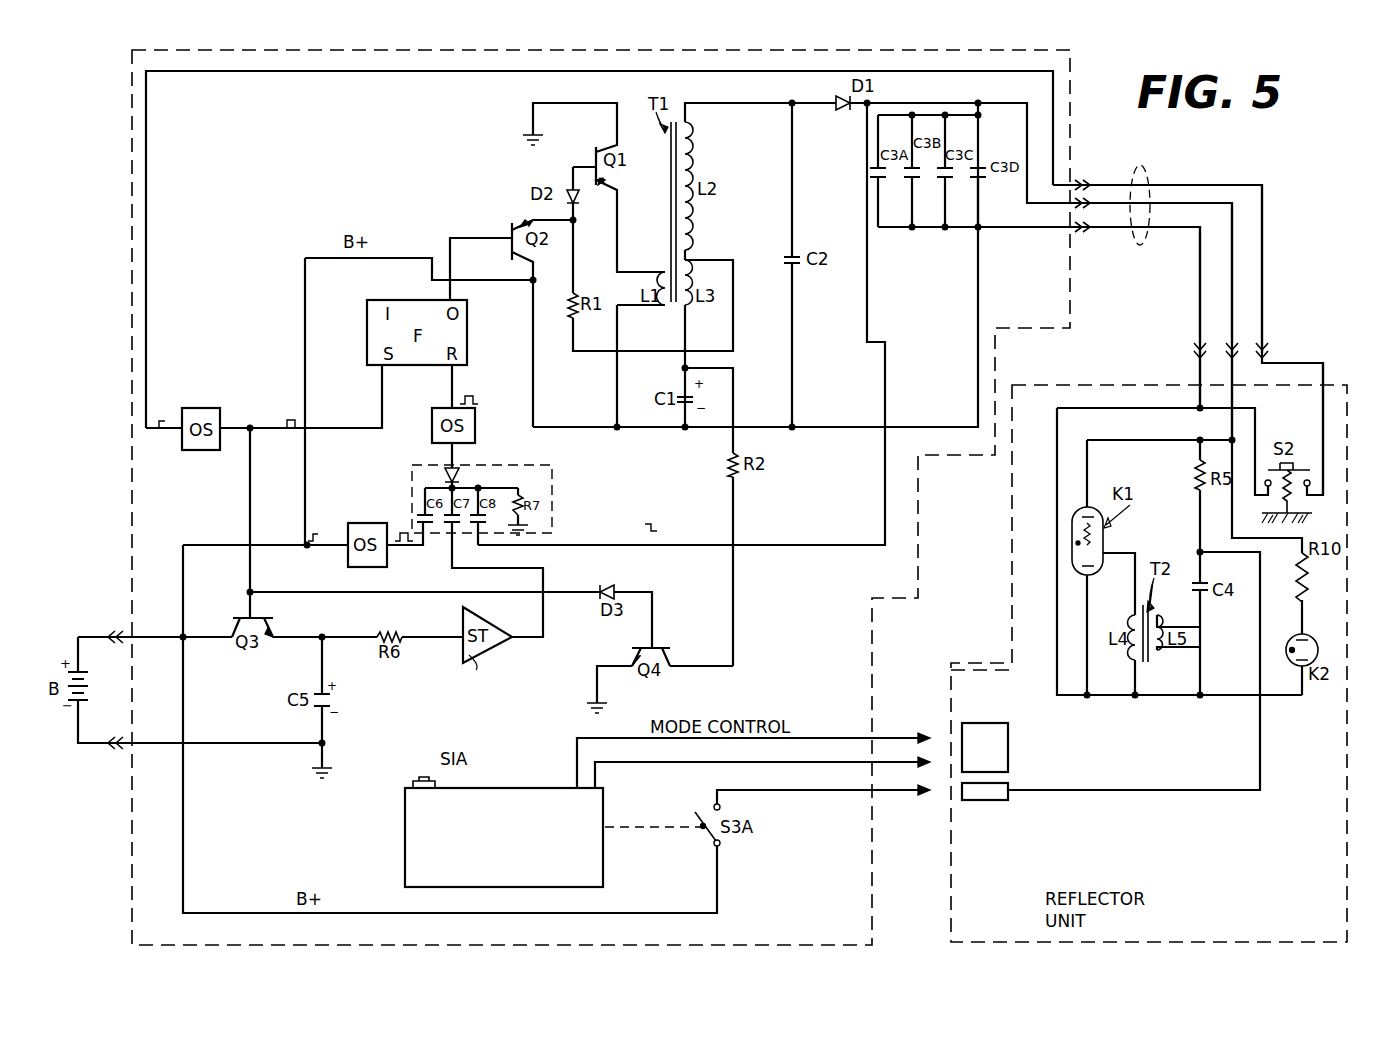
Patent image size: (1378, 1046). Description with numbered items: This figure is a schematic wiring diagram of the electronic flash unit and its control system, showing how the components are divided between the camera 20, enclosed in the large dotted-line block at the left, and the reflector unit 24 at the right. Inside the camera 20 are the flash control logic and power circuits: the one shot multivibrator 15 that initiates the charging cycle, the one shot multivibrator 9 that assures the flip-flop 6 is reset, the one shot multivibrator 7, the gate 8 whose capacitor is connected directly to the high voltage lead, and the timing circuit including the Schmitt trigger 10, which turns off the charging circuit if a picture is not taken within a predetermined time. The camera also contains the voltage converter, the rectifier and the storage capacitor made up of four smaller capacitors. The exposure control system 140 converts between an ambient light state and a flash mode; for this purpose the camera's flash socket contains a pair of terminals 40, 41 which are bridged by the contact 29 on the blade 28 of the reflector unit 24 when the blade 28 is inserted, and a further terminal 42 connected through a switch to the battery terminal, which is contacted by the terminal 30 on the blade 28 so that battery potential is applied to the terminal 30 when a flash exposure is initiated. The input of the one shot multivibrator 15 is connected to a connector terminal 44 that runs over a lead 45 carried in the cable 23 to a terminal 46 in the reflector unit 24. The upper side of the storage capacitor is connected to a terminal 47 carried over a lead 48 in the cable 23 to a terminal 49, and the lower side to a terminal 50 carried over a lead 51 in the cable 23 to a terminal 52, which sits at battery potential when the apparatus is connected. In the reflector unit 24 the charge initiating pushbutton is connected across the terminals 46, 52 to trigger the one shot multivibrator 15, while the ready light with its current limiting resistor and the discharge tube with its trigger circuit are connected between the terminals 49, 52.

The camera 20 is at (268, 137).
The flip-flop 6 is at (413, 300).
The one shot multivibrator 15 is at (209, 408).
The one shot multivibrator 7 is at (475, 428).
The one shot multivibrator 9 is at (370, 523).
The gate 8 is at (538, 483).
The Schmitt trigger 10 is at (490, 658).
The exposure control system 140 is at (529, 788).
The terminal 40 is at (878, 737).
The terminal 41 is at (878, 762).
The terminal 42 is at (868, 790).
The connector terminal 44 is at (1073, 185).
The lead 45 is at (1265, 235).
The terminal 46 is at (1285, 363).
The terminal 47 is at (1027, 203).
The lead 48 is at (1175, 203).
The terminal 49 is at (1232, 376).
The terminal 50 is at (1033, 228).
The lead 51 is at (1176, 228).
The terminal 52 is at (1200, 375).
The cable 23 is at (1218, 182).
The blade 28 is at (988, 670).
The contact 29 is at (995, 723).
The terminal 30 is at (985, 800).
The reflector unit 24 is at (1314, 924).